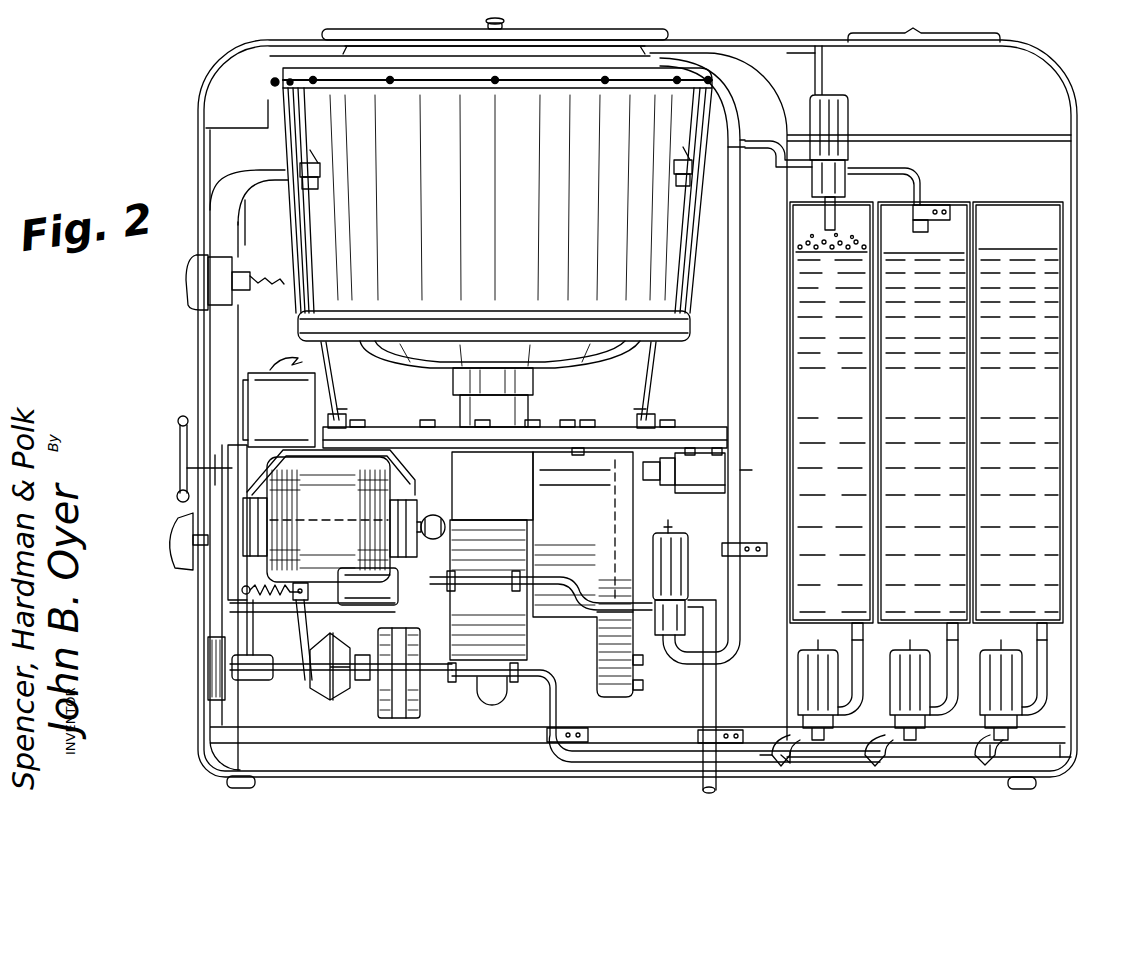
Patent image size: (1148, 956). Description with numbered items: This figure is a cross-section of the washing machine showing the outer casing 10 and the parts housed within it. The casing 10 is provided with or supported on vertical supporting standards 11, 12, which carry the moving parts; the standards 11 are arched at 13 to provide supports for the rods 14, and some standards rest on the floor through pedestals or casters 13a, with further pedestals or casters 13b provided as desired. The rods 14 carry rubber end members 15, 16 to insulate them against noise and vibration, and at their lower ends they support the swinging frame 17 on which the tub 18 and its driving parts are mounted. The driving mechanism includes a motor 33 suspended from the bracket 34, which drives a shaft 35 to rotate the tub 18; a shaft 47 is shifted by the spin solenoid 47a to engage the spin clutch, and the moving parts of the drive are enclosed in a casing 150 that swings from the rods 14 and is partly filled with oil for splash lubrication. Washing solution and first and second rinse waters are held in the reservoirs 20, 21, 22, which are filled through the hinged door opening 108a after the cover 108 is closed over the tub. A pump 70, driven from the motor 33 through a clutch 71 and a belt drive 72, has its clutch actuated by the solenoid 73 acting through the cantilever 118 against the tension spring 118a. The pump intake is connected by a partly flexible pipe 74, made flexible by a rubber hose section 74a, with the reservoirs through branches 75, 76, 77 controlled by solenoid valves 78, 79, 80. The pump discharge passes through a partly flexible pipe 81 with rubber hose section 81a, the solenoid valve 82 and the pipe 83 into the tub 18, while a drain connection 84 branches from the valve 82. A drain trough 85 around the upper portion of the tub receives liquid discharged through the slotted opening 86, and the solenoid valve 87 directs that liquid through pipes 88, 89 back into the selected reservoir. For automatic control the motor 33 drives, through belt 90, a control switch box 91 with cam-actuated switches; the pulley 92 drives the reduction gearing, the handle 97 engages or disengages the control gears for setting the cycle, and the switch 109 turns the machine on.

The casing 10 is at (210, 178).
The vertical supporting standard 11 is at (238, 246).
The vertical supporting standard 12 is at (1048, 755).
The arched portion 13 is at (290, 172).
The pedestal or caster 13a is at (227, 782).
The pedestal or caster 13b is at (1036, 783).
The rod 14 is at (333, 398).
The rubber end member 15 is at (346, 424).
The rubber end member 16 is at (320, 175).
The frame 17 is at (545, 425).
The tub 18 is at (418, 330).
The reservoir 20 is at (838, 392).
The reservoir 21 is at (930, 394).
The reservoir 22 is at (1025, 392).
The motor 33 is at (316, 519).
The bracket 34 is at (322, 444).
The shaft 35 is at (434, 512).
The shaft 47 is at (652, 482).
The spin solenoid 47a is at (700, 494).
The pump 70 is at (395, 692).
The clutch 71 is at (320, 680).
The belt drive 72 is at (245, 596).
The solenoid 73 is at (358, 586).
The partly flexible pipe 74 is at (548, 703).
The rubber hose section 74a is at (466, 680).
The branch 75 is at (812, 700).
The branch 76 is at (990, 700).
The branch 77 is at (1040, 690).
The solenoid valve 78 is at (772, 765).
The solenoid valve 79 is at (905, 700).
The solenoid valve 80 is at (1005, 680).
The partly flexible pipe 81 is at (565, 612).
The rubber hose section 81a is at (475, 578).
The solenoid valve 82 is at (688, 582).
The pipe 83 is at (740, 302).
The drain connection 84 is at (703, 686).
The drain trough 85 is at (745, 142).
The slotted opening 86 is at (272, 84).
The solenoid valve 87 is at (848, 113).
The pipe 88 is at (835, 214).
The pipe 89 is at (920, 189).
The belt 90 is at (212, 570).
The control switch box 91 is at (262, 400).
The pulley 92 is at (185, 468).
The handle 97 is at (180, 441).
The cover 108 is at (418, 30).
The hinged door opening 108a is at (940, 42).
The switch 109 is at (185, 278).
The cantilever 118 is at (285, 672).
The tension spring 118a is at (296, 600).
The casing 150 is at (604, 660).